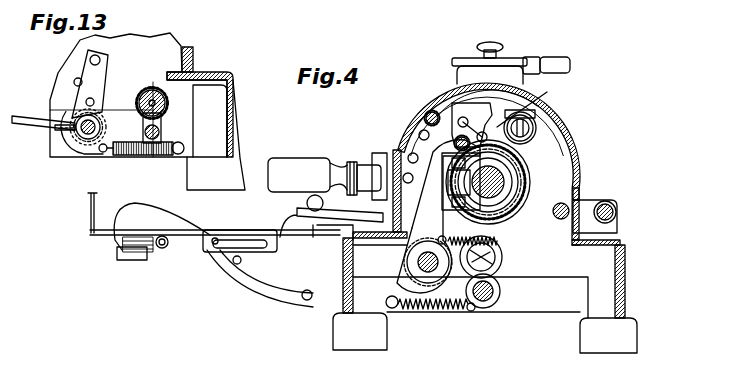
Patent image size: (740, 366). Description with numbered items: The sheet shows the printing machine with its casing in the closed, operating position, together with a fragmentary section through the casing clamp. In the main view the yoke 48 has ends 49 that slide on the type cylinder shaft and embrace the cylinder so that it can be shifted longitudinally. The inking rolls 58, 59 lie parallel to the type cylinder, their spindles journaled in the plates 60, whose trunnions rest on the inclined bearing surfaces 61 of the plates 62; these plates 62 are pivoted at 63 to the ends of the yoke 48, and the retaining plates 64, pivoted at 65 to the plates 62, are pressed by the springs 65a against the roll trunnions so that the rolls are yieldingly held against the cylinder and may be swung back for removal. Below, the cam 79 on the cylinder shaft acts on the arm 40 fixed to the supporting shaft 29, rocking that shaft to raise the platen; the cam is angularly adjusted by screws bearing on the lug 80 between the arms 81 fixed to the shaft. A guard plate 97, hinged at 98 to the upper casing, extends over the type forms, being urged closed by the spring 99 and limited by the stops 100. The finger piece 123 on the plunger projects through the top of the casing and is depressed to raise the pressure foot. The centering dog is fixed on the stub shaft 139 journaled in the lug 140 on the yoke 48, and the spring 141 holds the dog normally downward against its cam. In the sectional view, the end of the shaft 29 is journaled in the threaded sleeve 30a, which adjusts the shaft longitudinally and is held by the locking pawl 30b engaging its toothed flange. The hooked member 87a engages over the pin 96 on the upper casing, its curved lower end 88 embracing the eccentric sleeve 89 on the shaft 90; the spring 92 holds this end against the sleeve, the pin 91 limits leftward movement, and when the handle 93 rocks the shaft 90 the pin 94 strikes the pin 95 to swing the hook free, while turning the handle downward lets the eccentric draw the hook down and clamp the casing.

In FIG. 13, the supporting shaft 29 is at (138, 105).
In FIG. 4, the supporting shaft 29 is at (440, 280).
In FIG. 13, the sleeve 30a is at (166, 103).
In FIG. 13, the locking pawl 30b is at (159, 128).
In FIG. 4, the arm 40 is at (413, 190).
In FIG. 4, the yoke 48 is at (531, 106).
In FIG. 4, the yoke ends 49 is at (522, 174).
In FIG. 4, the inking roll 58 is at (408, 184).
In FIG. 4, the inking roll 59 is at (460, 118).
In FIG. 4, the plates 60 is at (440, 117).
In FIG. 4, the inclined bearing surfaces 61 is at (460, 138).
In FIG. 4, the plates 62 is at (496, 131).
In FIG. 4, the pivot 63 is at (468, 121).
In FIG. 4, the retaining plates 64 is at (419, 132).
In FIG. 4, the pivot 65 is at (397, 165).
In FIG. 4, the springs 65a is at (425, 118).
In FIG. 4, the cam 79 is at (443, 225).
In FIG. 4, the lug 80 is at (445, 180).
In FIG. 4, the arms 81 is at (447, 166).
In FIG. 13, the hooked member 87a is at (108, 58).
In FIG. 13, the curved lower end 88 is at (80, 150).
In FIG. 13, the eccentric sleeve 89 is at (100, 128).
In FIG. 13, the shaft 90 is at (78, 140).
In FIG. 13, the pin 91 is at (74, 83).
In FIG. 13, the spring 92 is at (138, 157).
In FIG. 13, the handle 93 is at (22, 124).
In FIG. 13, the pin 94 is at (62, 130).
In FIG. 13, the pin 95 is at (94, 100).
In FIG. 13, the pin 96 is at (90, 60).
In FIG. 4, the guard plate 97 is at (517, 247).
In FIG. 4, the hinge 98 is at (553, 211).
In FIG. 4, the spring 99 is at (523, 190).
In FIG. 4, the stops 100 is at (573, 190).
In FIG. 4, the finger piece 123 is at (495, 50).
In FIG. 4, the stub shaft 139 is at (527, 136).
In FIG. 4, the lug 140 is at (536, 128).
In FIG. 4, the spring 141 is at (535, 115).